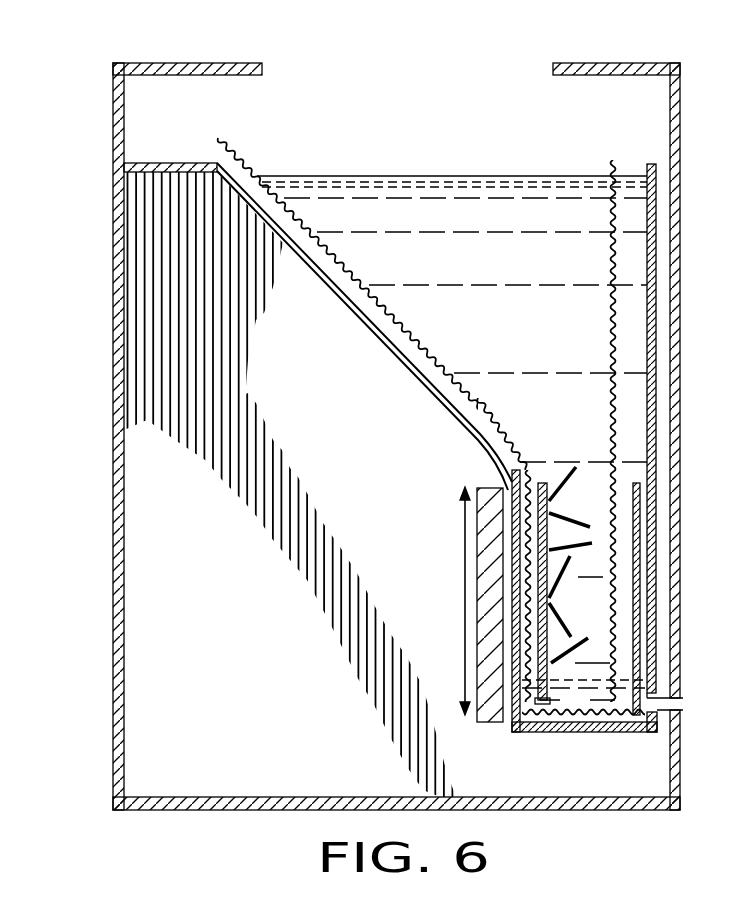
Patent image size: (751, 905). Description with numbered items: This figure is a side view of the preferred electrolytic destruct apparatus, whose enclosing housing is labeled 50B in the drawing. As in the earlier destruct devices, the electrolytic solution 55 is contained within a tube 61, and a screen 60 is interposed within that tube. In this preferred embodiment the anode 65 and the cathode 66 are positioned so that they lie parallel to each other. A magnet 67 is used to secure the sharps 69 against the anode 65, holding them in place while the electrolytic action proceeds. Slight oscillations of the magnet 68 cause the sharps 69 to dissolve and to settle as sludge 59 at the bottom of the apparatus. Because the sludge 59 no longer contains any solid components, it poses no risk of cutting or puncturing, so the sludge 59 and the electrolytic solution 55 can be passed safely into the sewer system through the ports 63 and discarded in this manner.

The tank housing 50B is at (682, 100).
The electrolytic solution 55 is at (512, 186).
The sludge 59 is at (583, 720).
The screen 60 is at (263, 176).
The tube 61 is at (648, 164).
The ports 63 is at (682, 704).
The anode 65 is at (546, 483).
The cathode 66 is at (636, 485).
The magnet 67 is at (484, 535).
The magnet 68 is at (464, 580).
The sharps 69 is at (583, 483).